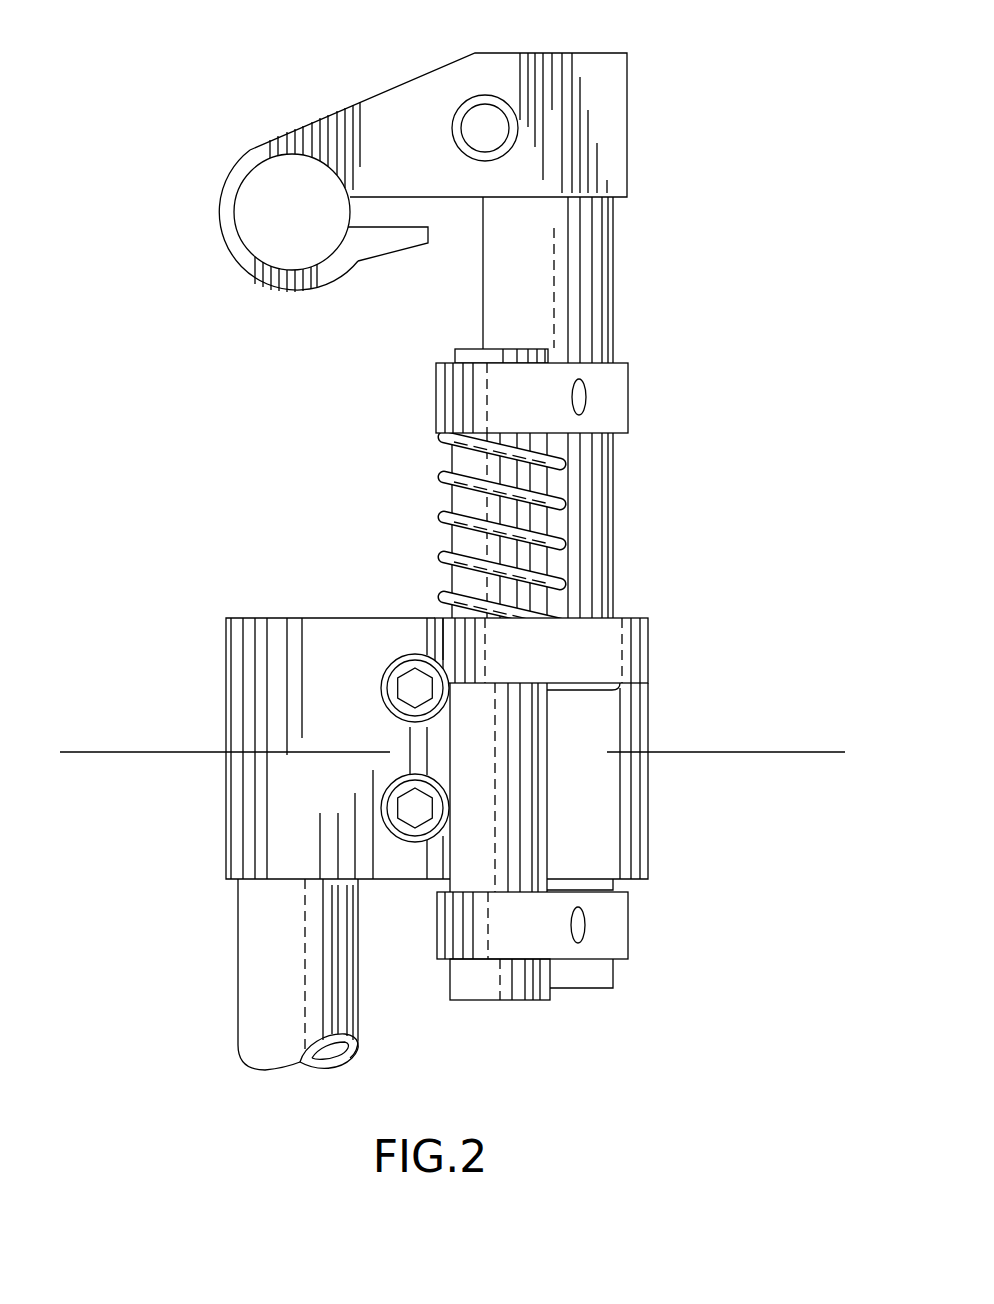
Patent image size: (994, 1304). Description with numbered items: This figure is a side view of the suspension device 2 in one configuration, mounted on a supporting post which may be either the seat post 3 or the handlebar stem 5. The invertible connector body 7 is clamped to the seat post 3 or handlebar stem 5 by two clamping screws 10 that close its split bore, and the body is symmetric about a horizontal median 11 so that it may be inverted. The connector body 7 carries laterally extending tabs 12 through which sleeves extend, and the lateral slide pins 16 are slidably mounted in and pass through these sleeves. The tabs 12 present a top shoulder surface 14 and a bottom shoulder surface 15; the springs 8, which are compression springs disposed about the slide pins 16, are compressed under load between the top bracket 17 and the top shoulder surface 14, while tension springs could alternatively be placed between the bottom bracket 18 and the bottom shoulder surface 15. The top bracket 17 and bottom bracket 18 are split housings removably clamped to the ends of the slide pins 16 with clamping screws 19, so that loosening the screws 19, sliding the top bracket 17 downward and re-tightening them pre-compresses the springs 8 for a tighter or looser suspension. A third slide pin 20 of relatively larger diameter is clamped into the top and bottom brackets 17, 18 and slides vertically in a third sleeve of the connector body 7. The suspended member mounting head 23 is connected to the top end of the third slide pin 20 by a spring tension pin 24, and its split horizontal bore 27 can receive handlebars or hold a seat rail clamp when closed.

The suspension device 2 is at (465, 536).
The seat post 3 is at (235, 974).
The handlebar stem 5 is at (237, 996).
The invertible connector body 7 is at (647, 693).
The springs 8 is at (567, 503).
The clamping screws 10 is at (400, 685).
The horizontal median 11 is at (780, 752).
The laterally extending tabs 12 is at (607, 648).
The top shoulder surface 14 is at (568, 617).
The bottom shoulder surface 15 is at (580, 684).
The slide pins 16 is at (540, 802).
The top bracket 17 is at (628, 407).
The bottom bracket 18 is at (628, 922).
The clamping screws 19 is at (580, 397).
The third slide pin 20 is at (612, 262).
The mounting head 23 is at (627, 122).
The spring tension pin 24 is at (483, 130).
The horizontal bore 27 is at (292, 213).